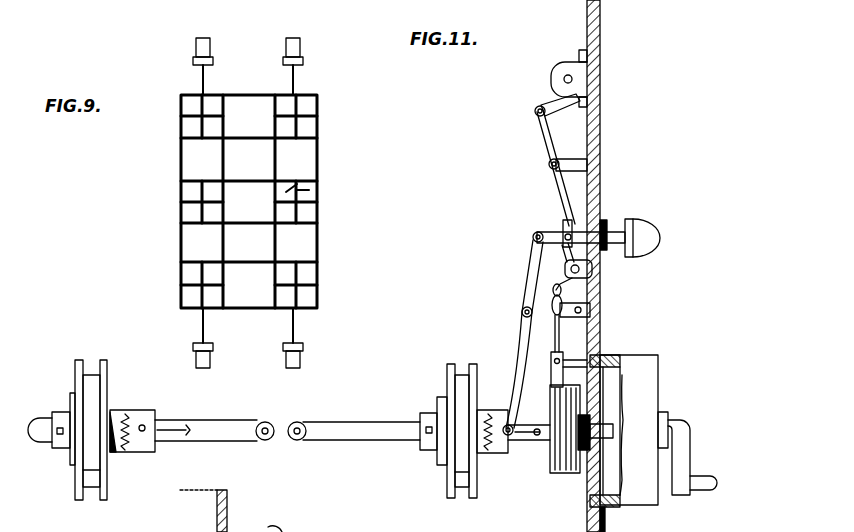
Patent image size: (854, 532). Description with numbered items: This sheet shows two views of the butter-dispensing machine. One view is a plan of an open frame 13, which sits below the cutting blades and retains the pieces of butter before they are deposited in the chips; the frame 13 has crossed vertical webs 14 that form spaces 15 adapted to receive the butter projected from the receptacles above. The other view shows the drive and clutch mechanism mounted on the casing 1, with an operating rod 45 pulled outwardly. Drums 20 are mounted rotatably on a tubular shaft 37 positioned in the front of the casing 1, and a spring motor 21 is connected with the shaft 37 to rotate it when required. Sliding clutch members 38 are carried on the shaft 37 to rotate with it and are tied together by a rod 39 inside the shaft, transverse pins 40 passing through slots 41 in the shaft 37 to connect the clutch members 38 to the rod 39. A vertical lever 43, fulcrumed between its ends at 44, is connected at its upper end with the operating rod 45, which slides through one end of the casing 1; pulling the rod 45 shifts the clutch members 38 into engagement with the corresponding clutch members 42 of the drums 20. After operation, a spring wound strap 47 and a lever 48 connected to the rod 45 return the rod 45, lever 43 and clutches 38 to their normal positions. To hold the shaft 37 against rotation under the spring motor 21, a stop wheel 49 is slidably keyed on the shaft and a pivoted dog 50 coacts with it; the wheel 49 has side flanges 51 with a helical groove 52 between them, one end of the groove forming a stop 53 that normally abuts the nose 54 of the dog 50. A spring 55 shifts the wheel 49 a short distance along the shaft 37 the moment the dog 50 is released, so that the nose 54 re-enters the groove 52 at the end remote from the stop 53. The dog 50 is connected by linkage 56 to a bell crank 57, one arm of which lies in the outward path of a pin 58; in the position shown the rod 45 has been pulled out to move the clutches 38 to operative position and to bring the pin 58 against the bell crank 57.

In FIG. 11, the casing 1 is at (600, 152).
In FIG. 9, the open frame 13 is at (181, 222).
In FIG. 9, the crossed vertical webs 14 is at (288, 189).
In FIG. 9, the spaces 15 is at (296, 199).
In FIG. 11, the drums 20 is at (88, 468).
In FIG. 11, the spring motor 21 is at (640, 402).
In FIG. 11, the tubular shaft 37 is at (386, 443).
In FIG. 11, the sliding clutch members 38 is at (505, 454).
In FIG. 11, the rod 39 is at (291, 422).
In FIG. 11, the transverse pins 40 is at (503, 425).
In FIG. 11, the slots 41 is at (527, 465).
In FIG. 11, the clutch members 42 is at (118, 456).
In FIG. 11, the vertical lever 43 is at (528, 285).
In FIG. 11, the fulcrum 44 is at (521, 313).
In FIG. 11, the operating rod 45 is at (625, 232).
In FIG. 11, the spring wound strap 47 is at (543, 107).
In FIG. 11, the lever 48 is at (540, 136).
In FIG. 11, the stop wheel 49 is at (562, 475).
In FIG. 11, the pivoted dog 50 is at (603, 362).
In FIG. 11, the side flanges 51 is at (606, 438).
In FIG. 11, the helical groove 52 is at (580, 452).
In FIG. 11, the stop 53 is at (555, 392).
In FIG. 11, the nose 54 is at (623, 376).
In FIG. 11, the spring 55 is at (668, 422).
In FIG. 11, the linkage 56 is at (562, 342).
In FIG. 11, the bell crank 57 is at (538, 250).
In FIG. 11, the pin 58 is at (556, 230).